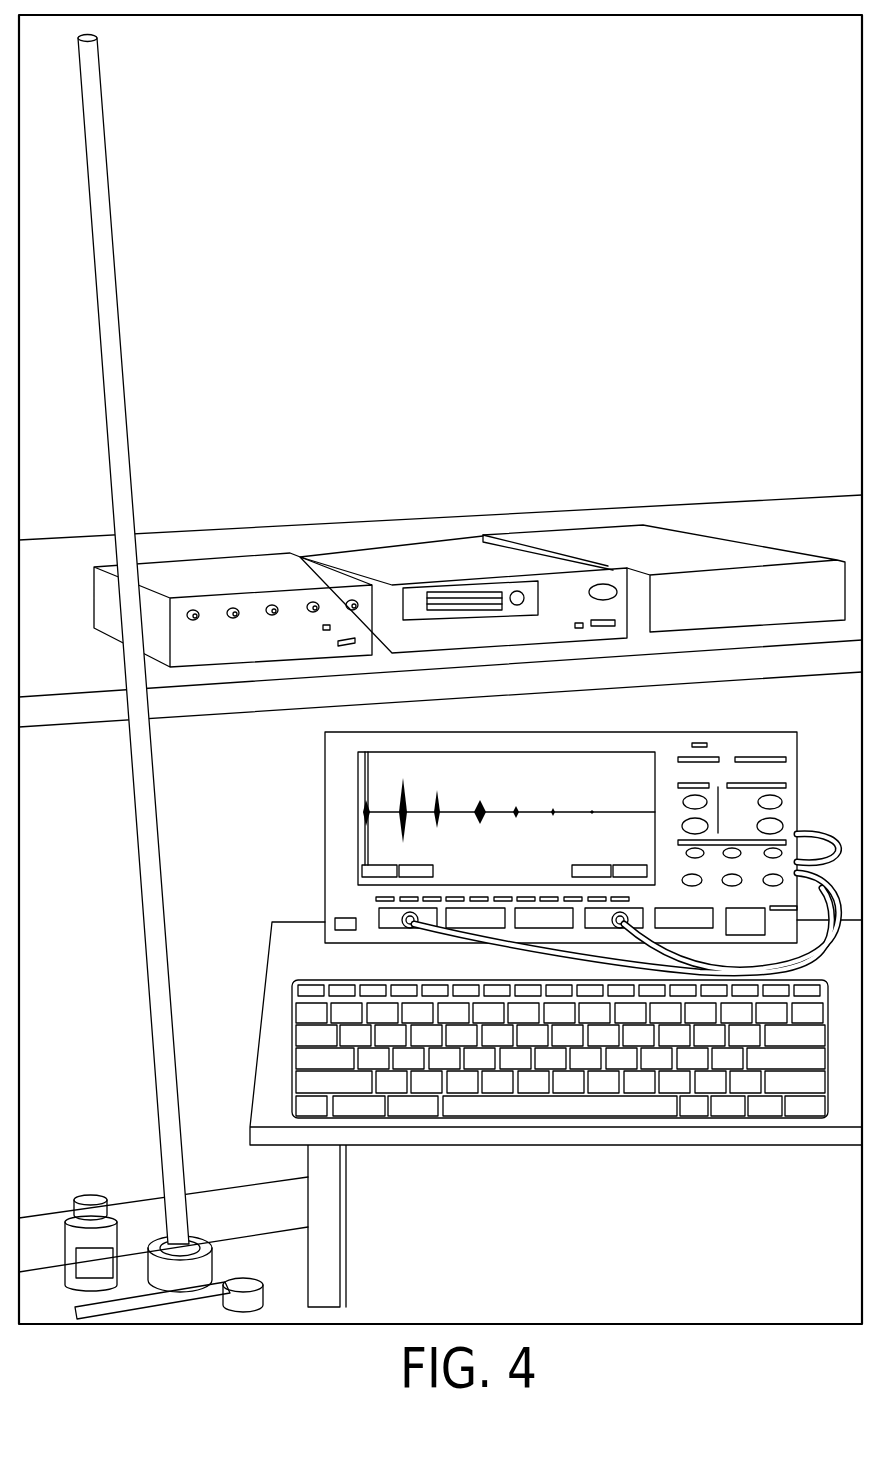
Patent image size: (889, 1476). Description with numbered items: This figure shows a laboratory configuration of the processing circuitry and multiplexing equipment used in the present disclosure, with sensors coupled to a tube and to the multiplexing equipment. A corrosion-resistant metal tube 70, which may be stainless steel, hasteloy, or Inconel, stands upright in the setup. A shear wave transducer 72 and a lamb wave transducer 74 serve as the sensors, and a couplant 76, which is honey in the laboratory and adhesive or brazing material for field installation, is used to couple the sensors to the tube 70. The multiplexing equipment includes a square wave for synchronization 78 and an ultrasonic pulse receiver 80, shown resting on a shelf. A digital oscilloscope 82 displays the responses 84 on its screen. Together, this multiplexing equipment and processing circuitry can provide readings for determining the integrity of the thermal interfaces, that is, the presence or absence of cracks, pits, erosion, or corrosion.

The metal tube 70 is at (110, 312).
The shear wave transducer 72 is at (243, 1305).
The lamb wave transducer 74 is at (160, 1272).
The couplant 76 is at (85, 1255).
The square wave for synchronization 78 is at (397, 557).
The ultrasonic pulse receiver 80 is at (193, 573).
The digital oscilloscope 82 is at (582, 832).
The responses 84 is at (520, 778).